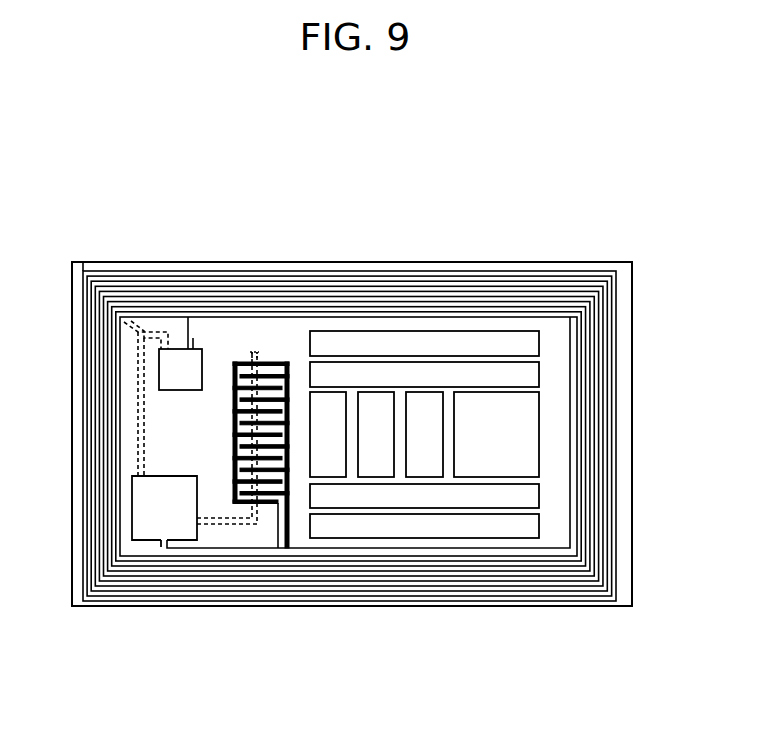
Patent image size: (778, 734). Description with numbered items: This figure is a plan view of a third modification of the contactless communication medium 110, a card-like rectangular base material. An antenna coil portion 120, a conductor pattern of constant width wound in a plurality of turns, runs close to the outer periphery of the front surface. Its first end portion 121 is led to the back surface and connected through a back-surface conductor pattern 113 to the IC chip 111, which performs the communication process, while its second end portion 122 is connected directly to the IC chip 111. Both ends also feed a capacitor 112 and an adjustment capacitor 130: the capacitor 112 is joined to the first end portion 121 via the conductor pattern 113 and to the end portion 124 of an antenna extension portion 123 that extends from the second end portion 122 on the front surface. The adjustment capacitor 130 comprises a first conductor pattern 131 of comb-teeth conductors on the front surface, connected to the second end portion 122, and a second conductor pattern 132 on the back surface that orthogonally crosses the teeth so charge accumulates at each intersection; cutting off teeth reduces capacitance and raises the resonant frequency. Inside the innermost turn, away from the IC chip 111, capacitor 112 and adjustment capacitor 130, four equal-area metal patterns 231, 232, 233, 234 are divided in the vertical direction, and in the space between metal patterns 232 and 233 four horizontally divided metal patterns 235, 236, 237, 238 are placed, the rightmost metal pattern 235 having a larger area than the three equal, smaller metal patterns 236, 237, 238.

The contactless communication medium 110 is at (553, 608).
The antenna coil portion 120 is at (487, 271).
The first end portion 121 is at (83, 268).
The second end portion 122 is at (193, 338).
The antenna extension portion 123 is at (395, 316).
The end portion 124 is at (160, 549).
The IC chip 111 is at (181, 391).
The capacitor 112 is at (138, 528).
The conductor pattern 113 is at (137, 411).
The adjustment capacitor 130 is at (273, 512).
The first conductor pattern 131 is at (286, 360).
The second conductor pattern 132 is at (256, 350).
The metal pattern 231 is at (535, 342).
The metal pattern 232 is at (535, 373).
The metal pattern 233 is at (535, 495).
The metal pattern 234 is at (535, 522).
The metal pattern 235 is at (530, 438).
The metal pattern 236 is at (425, 466).
The metal pattern 237 is at (375, 466).
The metal pattern 238 is at (330, 466).